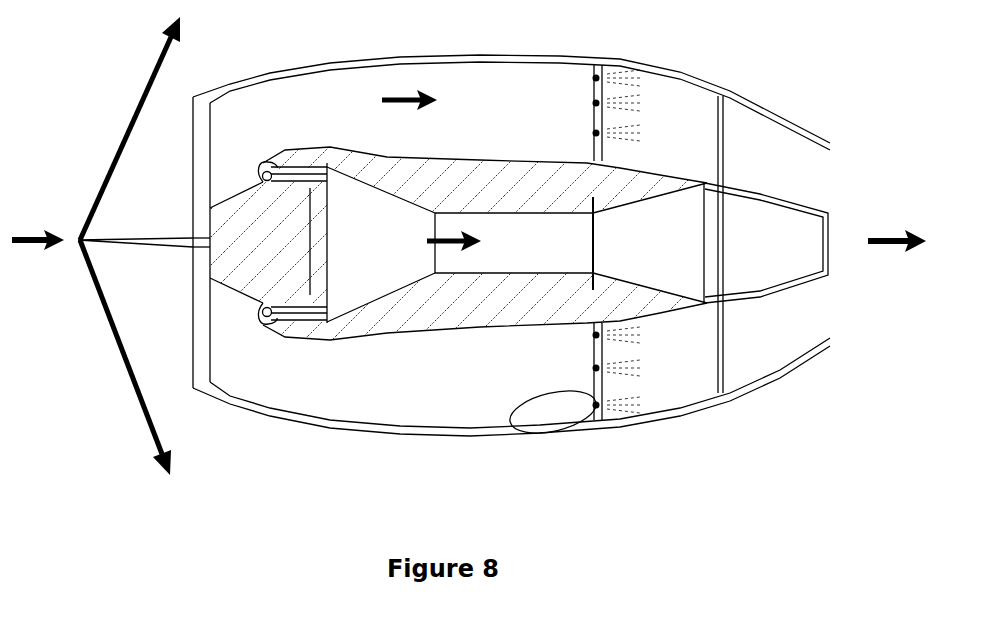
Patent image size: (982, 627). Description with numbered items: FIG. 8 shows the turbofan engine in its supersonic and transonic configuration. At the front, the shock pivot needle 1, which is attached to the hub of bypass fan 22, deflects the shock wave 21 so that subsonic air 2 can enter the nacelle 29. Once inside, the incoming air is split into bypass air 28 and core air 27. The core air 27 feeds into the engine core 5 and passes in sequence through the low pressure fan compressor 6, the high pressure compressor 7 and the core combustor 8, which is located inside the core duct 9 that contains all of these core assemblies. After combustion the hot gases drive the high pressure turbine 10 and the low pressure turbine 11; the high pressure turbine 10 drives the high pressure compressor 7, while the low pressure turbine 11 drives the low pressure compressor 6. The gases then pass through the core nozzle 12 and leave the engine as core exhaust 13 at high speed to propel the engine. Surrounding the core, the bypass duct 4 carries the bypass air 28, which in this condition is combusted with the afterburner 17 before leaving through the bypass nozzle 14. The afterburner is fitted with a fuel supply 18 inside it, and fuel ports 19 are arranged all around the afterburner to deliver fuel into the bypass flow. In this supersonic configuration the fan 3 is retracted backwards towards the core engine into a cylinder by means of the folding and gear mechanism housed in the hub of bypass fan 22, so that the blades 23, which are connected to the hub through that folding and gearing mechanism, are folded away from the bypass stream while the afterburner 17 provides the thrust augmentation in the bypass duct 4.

The shock pivot needle 1 is at (150, 248).
The incoming air 2 is at (38, 230).
The bypass fan 3 is at (282, 338).
The bypass duct 4 is at (320, 97).
The engine core 5 is at (465, 327).
The low pressure compressor 6 is at (343, 273).
The high pressure compressor 7 is at (402, 250).
The core combustion chamber 8 is at (530, 237).
The engine core duct 9 is at (487, 188).
The high pressure turbine 10 is at (613, 232).
The low pressure turbine 11 is at (678, 232).
The core exhaust nozzle 12 is at (787, 232).
The core exhaust gases 13 is at (896, 235).
The bypass nozzle 14 is at (670, 407).
The afterburner 17 is at (603, 392).
The fuel supply 18 is at (542, 418).
The fuel ports 19 is at (600, 90).
The shock wave 21 is at (122, 362).
The hub of bypass fan 22 is at (245, 237).
The blades 23 is at (282, 153).
The core air 27 is at (436, 214).
The bypass air 28 is at (397, 97).
The nacelle 29 is at (203, 392).